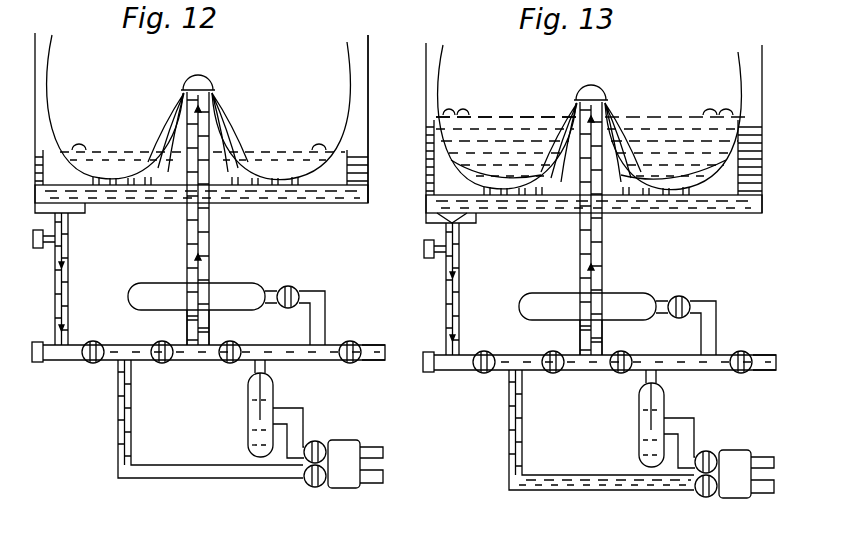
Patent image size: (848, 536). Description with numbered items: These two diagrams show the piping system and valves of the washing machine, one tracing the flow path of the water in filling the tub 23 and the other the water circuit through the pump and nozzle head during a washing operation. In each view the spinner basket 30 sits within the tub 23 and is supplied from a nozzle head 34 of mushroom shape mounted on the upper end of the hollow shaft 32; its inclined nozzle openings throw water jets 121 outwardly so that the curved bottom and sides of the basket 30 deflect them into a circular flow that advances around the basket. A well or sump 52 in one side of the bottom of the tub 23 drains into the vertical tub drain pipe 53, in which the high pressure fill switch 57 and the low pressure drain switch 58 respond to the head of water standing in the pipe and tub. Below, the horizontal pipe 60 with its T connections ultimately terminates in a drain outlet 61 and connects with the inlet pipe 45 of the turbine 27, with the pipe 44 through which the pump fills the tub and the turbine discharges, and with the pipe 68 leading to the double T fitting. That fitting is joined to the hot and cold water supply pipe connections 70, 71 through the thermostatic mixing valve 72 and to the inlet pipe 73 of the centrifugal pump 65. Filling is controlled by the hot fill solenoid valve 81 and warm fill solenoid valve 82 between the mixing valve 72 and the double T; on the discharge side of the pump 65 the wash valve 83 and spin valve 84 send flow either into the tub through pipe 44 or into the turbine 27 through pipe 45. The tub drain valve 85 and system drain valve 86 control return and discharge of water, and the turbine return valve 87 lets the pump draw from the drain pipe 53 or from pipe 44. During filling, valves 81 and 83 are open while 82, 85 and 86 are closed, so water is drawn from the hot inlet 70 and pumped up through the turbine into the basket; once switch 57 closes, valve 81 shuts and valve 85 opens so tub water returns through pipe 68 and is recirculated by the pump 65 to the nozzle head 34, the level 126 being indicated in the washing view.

In FIG. 12, the tub 23 is at (426, 50).
In FIG. 12, the turbine 27 is at (155, 283).
In FIG. 13, the turbine 27 is at (585, 291).
In FIG. 12, the spinner basket 30 is at (350, 60).
In FIG. 13, the spinner basket 30 is at (594, 128).
In FIG. 12, the hollow shaft 32 is at (209, 220).
In FIG. 13, the hollow shaft 32 is at (592, 228).
In FIG. 12, the nozzle head 34 is at (193, 80).
In FIG. 13, the nozzle head 34 is at (587, 75).
In FIG. 12, the pipe 44 is at (187, 329).
In FIG. 13, the pipe 44 is at (565, 337).
In FIG. 12, the inlet pipe 45 is at (275, 289).
In FIG. 13, the inlet pipe 45 is at (648, 289).
In FIG. 12, the well or sump 52 is at (85, 208).
In FIG. 13, the well or sump 52 is at (472, 225).
In FIG. 12, the tub drain pipe 53 is at (68, 240).
In FIG. 13, the tub drain pipe 53 is at (474, 289).
In FIG. 12, the high pressure fill switch 57 is at (36, 249).
In FIG. 13, the high pressure fill switch 57 is at (415, 256).
In FIG. 12, the low pressure drain switch 58 is at (38, 362).
In FIG. 13, the low pressure drain switch 58 is at (414, 346).
In FIG. 12, the horizontal pipe 60 is at (298, 362).
In FIG. 13, the horizontal pipe 60 is at (605, 354).
In FIG. 12, the drain outlet 61 is at (383, 362).
In FIG. 13, the drain outlet 61 is at (773, 381).
In FIG. 12, the centrifugal pump 65 is at (248, 418).
In FIG. 13, the centrifugal pump 65 is at (627, 418).
In FIG. 12, the pipe 68 is at (118, 434).
In FIG. 13, the pipe 68 is at (577, 430).
In FIG. 12, the hot water supply pipe connection 70 is at (383, 448).
In FIG. 13, the hot water supply pipe connection 70 is at (772, 447).
In FIG. 12, the cold water supply pipe connection 71 is at (383, 476).
In FIG. 13, the cold water supply pipe connection 71 is at (771, 496).
In FIG. 12, the thermostatic mixing valve 72 is at (343, 488).
In FIG. 13, the thermostatic mixing valve 72 is at (736, 486).
In FIG. 12, the inlet pipe 73 is at (296, 406).
In FIG. 13, the inlet pipe 73 is at (680, 427).
In FIG. 12, the hot fill solenoid valve 81 is at (318, 442).
In FIG. 13, the hot fill solenoid valve 81 is at (718, 447).
In FIG. 12, the warm fill solenoid valve 82 is at (311, 487).
In FIG. 13, the warm fill solenoid valve 82 is at (691, 499).
In FIG. 12, the wash valve 83 is at (226, 363).
In FIG. 13, the wash valve 83 is at (607, 379).
In FIG. 12, the spin valve 84 is at (292, 287).
In FIG. 13, the spin valve 84 is at (694, 291).
In FIG. 12, the tub drain valve 85 is at (93, 363).
In FIG. 13, the tub drain valve 85 is at (468, 379).
In FIG. 12, the system drain valve 86 is at (360, 339).
In FIG. 13, the system drain valve 86 is at (749, 346).
In FIG. 12, the turbine return valve 87 is at (157, 342).
In FIG. 13, the turbine return valve 87 is at (551, 379).
In FIG. 13, the water jets 121 is at (631, 126).
In FIG. 13, the liquid level 126 is at (506, 101).